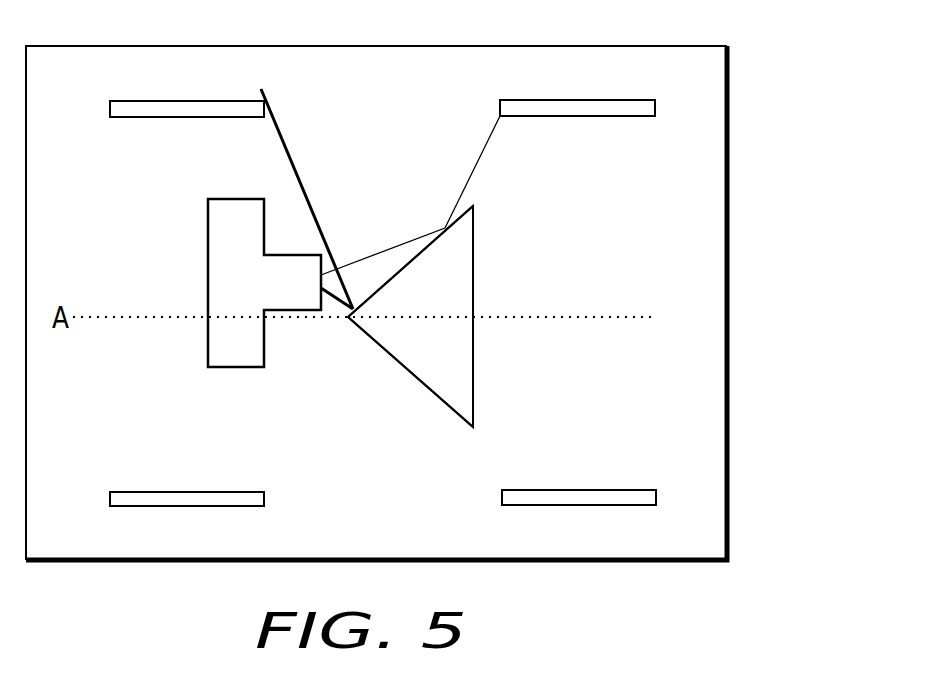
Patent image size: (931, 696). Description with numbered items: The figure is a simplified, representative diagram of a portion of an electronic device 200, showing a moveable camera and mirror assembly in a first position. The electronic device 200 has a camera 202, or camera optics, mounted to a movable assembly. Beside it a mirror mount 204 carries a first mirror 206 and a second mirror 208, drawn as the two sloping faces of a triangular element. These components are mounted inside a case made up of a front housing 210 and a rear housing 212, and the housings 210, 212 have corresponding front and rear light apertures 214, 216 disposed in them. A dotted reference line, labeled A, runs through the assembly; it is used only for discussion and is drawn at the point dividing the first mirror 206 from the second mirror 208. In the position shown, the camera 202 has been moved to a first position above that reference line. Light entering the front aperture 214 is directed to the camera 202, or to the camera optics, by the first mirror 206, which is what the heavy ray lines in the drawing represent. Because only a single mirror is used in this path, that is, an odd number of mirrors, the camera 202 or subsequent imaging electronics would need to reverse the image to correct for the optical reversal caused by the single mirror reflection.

The electronic device 200 is at (740, 74).
The camera 202 is at (206, 240).
The mirror mount 204 is at (477, 226).
The first mirror 206 is at (405, 268).
The second mirror 208 is at (413, 372).
The front housing 210 is at (603, 100).
The rear housing 212 is at (645, 488).
The front light aperture 214 is at (322, 90).
The rear light aperture 216 is at (298, 512).